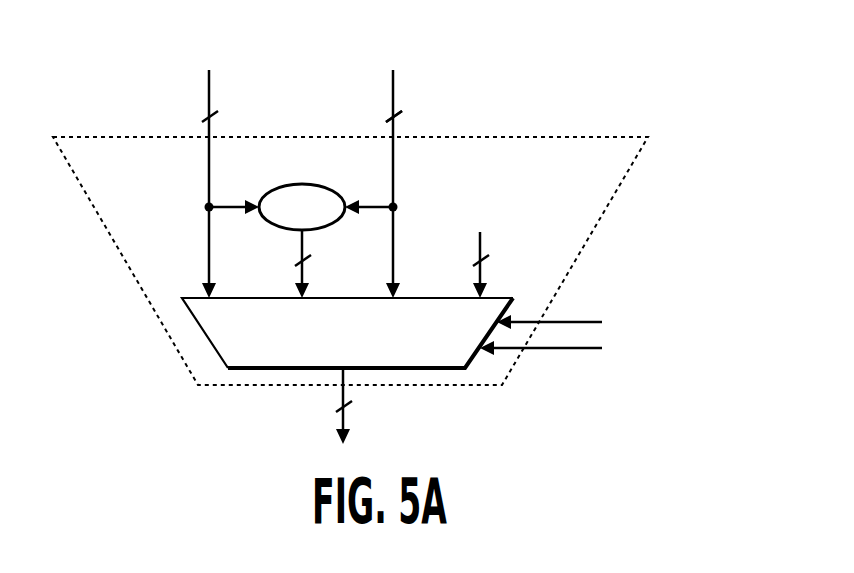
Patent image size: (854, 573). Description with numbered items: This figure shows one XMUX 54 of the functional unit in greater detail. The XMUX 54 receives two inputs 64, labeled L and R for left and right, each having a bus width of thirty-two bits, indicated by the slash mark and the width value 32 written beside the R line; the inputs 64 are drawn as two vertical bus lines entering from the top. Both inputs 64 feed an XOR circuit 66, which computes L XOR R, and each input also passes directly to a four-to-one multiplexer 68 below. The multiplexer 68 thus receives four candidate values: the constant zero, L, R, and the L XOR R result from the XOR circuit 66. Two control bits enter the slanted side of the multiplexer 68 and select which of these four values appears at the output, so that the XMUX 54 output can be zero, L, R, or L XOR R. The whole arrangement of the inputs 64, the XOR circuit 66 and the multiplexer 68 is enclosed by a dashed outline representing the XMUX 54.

The XMUX 54 is at (647, 90).
The 32-bit inputs 64 is at (210, 93).
The 32-bit bus width indicator 32 is at (413, 124).
The XOR circuit 66 is at (297, 184).
The 4-to-1 multiplexer 68 is at (423, 297).